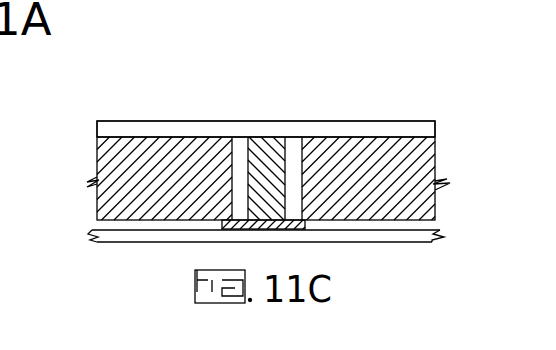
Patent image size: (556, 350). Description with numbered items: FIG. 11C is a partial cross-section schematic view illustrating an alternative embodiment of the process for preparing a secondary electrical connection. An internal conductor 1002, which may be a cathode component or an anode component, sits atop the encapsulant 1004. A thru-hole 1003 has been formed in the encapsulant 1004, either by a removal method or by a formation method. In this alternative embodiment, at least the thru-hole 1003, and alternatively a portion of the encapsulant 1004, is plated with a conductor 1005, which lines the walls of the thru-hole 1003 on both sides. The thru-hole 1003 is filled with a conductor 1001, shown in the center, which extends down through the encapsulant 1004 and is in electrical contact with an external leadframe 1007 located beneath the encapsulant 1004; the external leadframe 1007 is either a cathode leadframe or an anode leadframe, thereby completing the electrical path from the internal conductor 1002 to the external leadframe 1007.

The conductor 1001 is at (265, 157).
The internal conductor 1002 is at (335, 128).
The thru-hole 1003 is at (230, 153).
The encapsulant 1004 is at (118, 155).
The plated conductor 1005 is at (240, 143).
The external leadframe 1007 is at (142, 236).